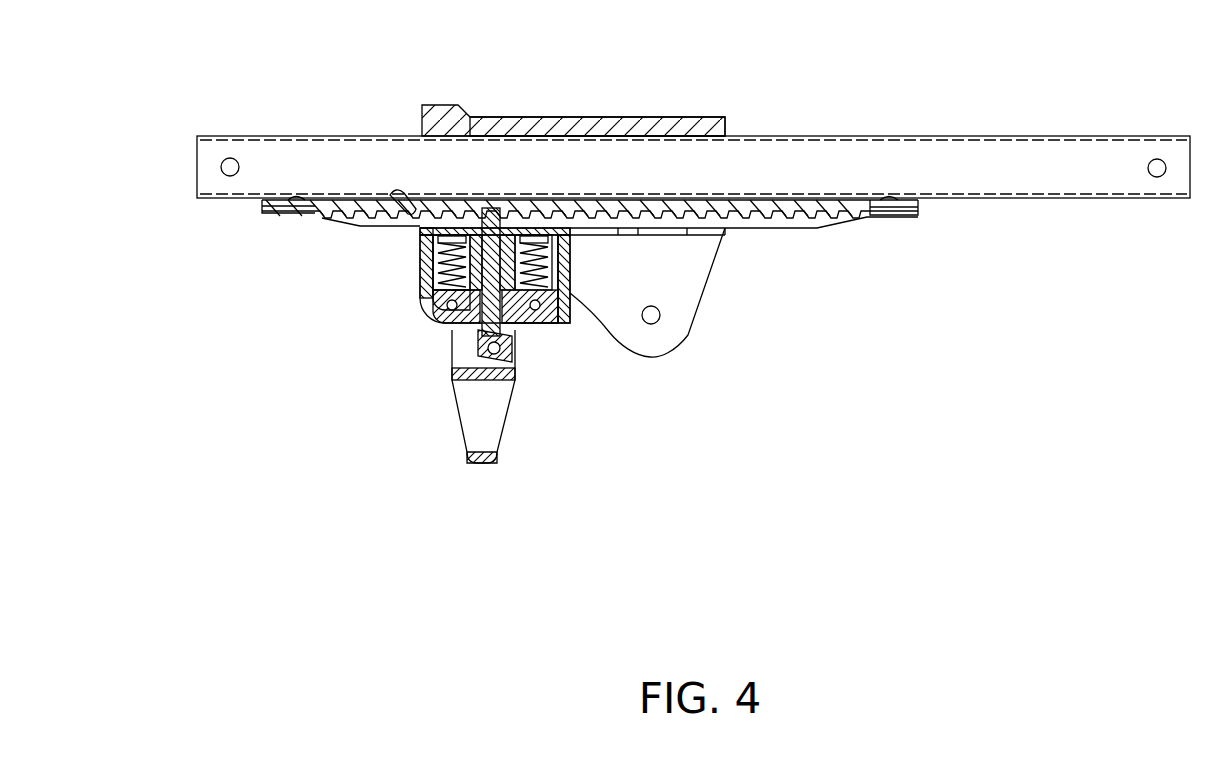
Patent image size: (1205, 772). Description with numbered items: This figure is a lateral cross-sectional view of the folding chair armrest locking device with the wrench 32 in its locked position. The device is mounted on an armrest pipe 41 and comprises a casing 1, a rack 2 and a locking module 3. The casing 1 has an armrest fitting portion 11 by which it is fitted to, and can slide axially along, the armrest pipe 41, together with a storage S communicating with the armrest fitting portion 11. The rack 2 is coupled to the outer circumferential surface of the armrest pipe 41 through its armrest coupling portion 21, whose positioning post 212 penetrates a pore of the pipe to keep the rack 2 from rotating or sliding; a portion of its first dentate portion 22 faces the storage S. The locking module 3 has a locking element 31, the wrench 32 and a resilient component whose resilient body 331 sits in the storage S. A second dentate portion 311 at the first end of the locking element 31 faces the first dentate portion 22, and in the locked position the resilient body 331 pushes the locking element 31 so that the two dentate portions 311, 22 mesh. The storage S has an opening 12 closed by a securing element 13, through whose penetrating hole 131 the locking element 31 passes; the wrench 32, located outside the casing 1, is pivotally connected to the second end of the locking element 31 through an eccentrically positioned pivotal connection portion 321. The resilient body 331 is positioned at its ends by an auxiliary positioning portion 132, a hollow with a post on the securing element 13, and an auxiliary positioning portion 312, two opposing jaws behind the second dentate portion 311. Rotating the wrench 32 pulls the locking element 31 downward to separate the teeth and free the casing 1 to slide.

The casing 1 is at (530, 127).
The armrest fitting portion 11 is at (645, 127).
The opening 12 is at (548, 326).
The securing element 13 is at (489, 310).
The penetrating hole 131 is at (482, 296).
The auxiliary positioning portion 132 is at (570, 323).
The rack 2 is at (590, 158).
The armrest coupling portion 21 is at (590, 208).
The positioning post 212 is at (395, 190).
The first dentate portion 22 is at (737, 218).
The locking module 3 is at (543, 350).
The locking element 31 is at (480, 333).
The second dentate portion 311 is at (325, 218).
The auxiliary positioning portion 312 is at (570, 250).
The wrench 32 is at (472, 430).
The pivotal connection portion 321 is at (490, 354).
The resilient body 331 is at (570, 272).
The armrest pipe 41 is at (888, 160).
The storage S is at (420, 266).